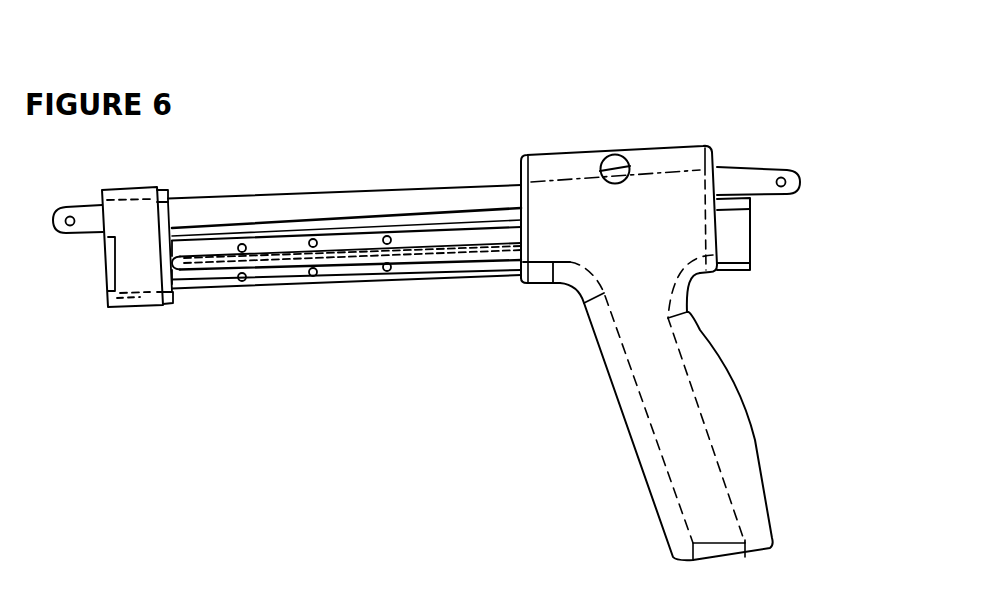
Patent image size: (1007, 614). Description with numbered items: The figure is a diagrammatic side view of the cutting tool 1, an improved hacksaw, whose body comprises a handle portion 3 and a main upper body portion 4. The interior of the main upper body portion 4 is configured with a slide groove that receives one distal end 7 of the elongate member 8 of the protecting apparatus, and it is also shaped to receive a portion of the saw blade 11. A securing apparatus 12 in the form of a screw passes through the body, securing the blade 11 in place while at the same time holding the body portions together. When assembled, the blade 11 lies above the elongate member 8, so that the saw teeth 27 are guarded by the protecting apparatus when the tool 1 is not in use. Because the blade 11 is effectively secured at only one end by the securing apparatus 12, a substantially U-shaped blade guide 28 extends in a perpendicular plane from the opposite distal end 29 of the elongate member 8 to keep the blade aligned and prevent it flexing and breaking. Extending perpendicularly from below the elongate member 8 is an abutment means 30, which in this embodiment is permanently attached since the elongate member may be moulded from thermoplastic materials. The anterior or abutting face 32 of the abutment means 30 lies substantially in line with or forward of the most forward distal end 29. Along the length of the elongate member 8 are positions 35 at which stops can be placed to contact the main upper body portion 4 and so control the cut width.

The tool 1 is at (552, 75).
The handle portion 3 is at (753, 466).
The main upper body portion 4 is at (663, 208).
The distal end 7 is at (752, 240).
The elongate member 8 is at (467, 273).
The saw blade 11 is at (292, 207).
The securing apparatus 12 is at (622, 153).
The saw teeth 27 is at (207, 230).
The blade guide 28 is at (168, 202).
The opposite distal end 29 is at (100, 233).
The abutment means 30 is at (122, 303).
The anterior face 32 is at (103, 298).
The positions 35 is at (314, 274).